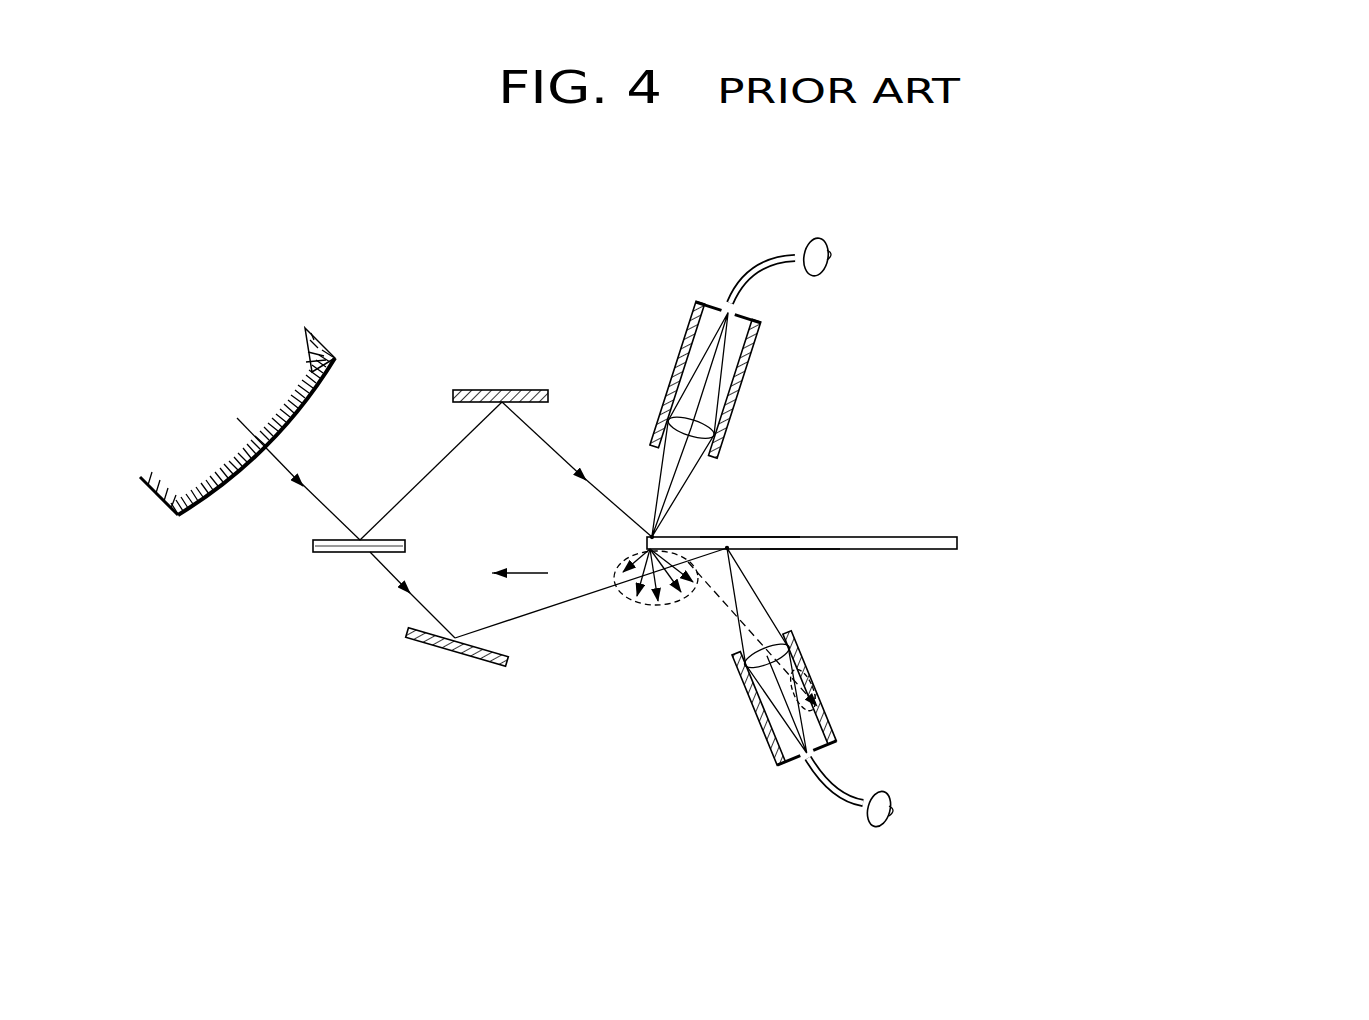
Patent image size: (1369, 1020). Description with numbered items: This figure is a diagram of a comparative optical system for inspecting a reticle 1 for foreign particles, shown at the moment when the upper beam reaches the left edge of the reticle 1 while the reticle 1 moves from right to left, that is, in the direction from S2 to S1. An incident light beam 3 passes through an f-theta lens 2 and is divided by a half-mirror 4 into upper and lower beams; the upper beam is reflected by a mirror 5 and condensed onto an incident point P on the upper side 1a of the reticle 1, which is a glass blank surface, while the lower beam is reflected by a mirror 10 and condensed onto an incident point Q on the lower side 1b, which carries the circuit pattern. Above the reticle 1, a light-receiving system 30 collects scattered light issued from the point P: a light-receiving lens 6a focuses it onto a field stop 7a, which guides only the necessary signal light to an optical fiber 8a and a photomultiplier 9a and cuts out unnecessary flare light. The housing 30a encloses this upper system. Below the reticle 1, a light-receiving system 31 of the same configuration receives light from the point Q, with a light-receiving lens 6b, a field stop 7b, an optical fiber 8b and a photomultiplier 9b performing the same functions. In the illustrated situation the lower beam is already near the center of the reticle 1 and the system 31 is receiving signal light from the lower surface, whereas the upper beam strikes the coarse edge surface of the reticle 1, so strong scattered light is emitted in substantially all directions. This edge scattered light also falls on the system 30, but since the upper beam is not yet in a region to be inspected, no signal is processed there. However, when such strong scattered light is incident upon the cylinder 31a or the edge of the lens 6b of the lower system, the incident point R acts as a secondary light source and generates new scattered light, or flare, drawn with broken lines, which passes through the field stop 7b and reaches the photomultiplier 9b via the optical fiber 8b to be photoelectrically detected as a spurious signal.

The reticle 1 is at (852, 533).
The upper side 1a is at (748, 536).
The lower side 1b is at (797, 550).
The f-theta lens 2 is at (310, 330).
The incident light beam 3 is at (317, 495).
The half-mirror 4 is at (313, 545).
The reflecting mirror 5 is at (450, 390).
The reflecting mirror 10 is at (475, 662).
The light-receiving system 30 is at (872, 356).
The housing of upper light-receiving system 30a is at (705, 383).
The light-receiving lens 6a is at (691, 428).
The field stop 7a is at (728, 312).
The optical fiber 8a is at (765, 266).
The photomultiplier 9a is at (833, 265).
The light-receiving system 31 is at (984, 711).
The cylinder 31a is at (784, 698).
The light-receiving lens 6b is at (767, 655).
The field stop 7b is at (806, 753).
The optical fiber 8b is at (827, 788).
The photomultiplier 9b is at (890, 818).
The incident point P is at (642, 512).
The incident point Q is at (715, 568).
The incident point R is at (829, 674).
The reticle movement direction S1 is at (476, 574).
The reticle movement direction S2 is at (539, 574).